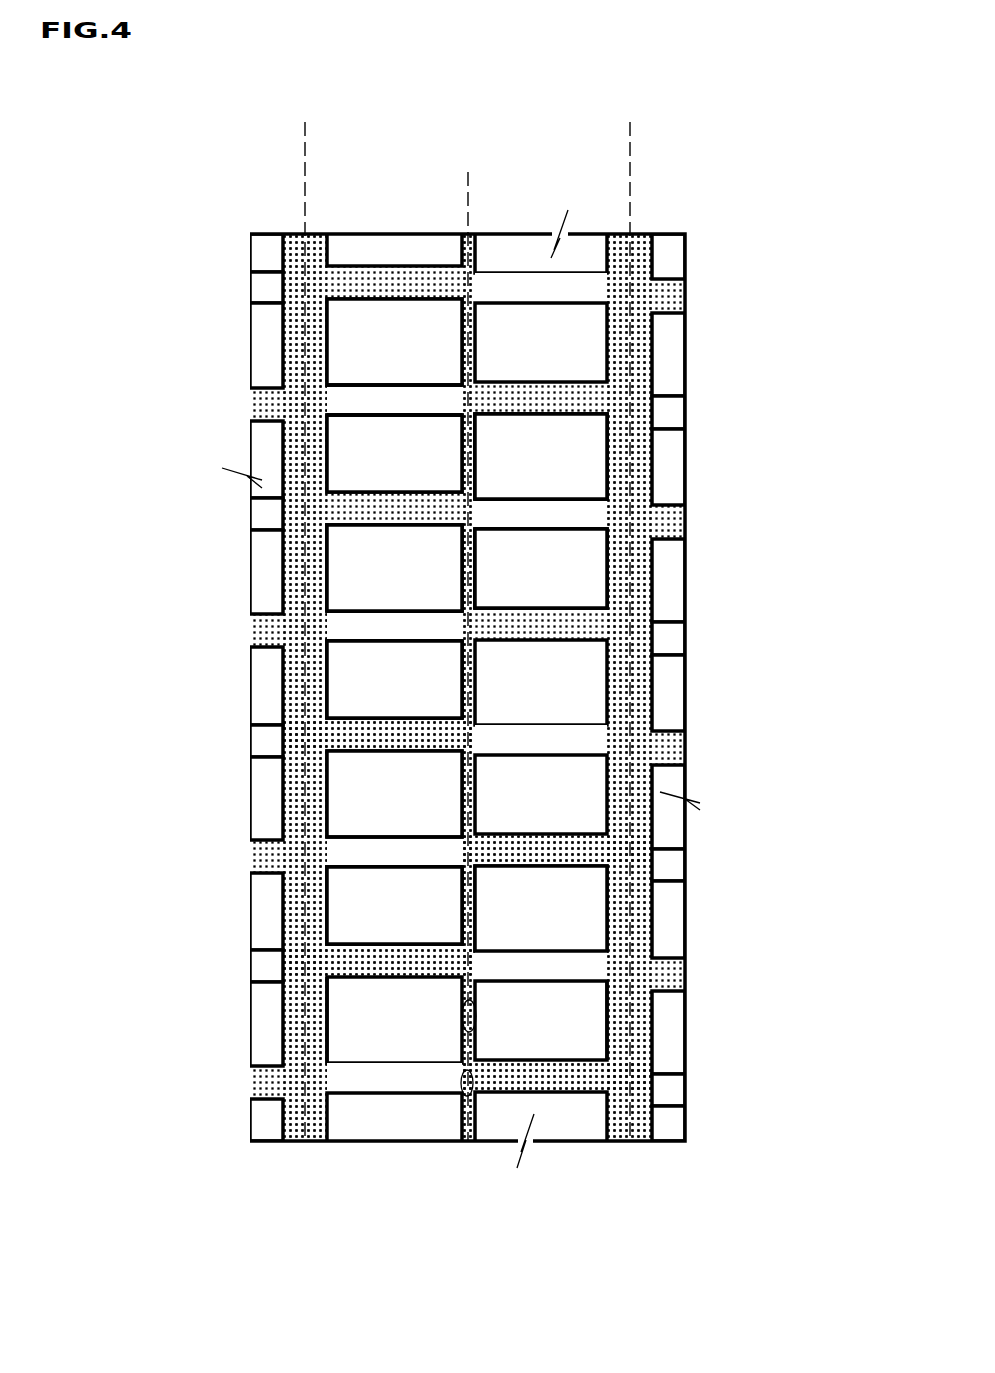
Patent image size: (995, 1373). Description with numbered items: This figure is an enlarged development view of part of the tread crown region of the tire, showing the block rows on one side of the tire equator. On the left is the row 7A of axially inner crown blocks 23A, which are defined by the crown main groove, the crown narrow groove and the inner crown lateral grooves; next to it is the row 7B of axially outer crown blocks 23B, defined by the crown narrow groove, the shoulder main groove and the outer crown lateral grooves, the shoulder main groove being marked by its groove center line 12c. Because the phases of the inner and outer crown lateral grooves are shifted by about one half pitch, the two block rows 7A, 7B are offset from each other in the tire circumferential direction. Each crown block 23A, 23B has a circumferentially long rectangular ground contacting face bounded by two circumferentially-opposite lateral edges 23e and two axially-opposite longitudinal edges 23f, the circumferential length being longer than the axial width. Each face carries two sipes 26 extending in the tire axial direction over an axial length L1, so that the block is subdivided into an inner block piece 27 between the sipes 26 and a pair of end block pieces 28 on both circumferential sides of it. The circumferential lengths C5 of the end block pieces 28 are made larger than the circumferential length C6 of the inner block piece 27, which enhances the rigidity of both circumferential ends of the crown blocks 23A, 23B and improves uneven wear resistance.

The groove center line of shoulder main groove 12c is at (630, 621).
The row of inner crown blocks 7A is at (405, 310).
The row of outer crown blocks 7B is at (522, 322).
The axially inner crown block 23A is at (133, 548).
The axially outer crown block 23B is at (780, 435).
The end block piece 28 is at (346, 573).
The inner block piece 27 is at (346, 628).
The sipe 26 is at (370, 382).
The lateral edge 23e is at (390, 748).
The longitudinal edge 23f is at (327, 1040).
The axial length of sipe L1 is at (462, 383).
The circumferential length of end block piece C5 is at (160, 933).
The circumferential length of inner block piece C6 is at (163, 837).